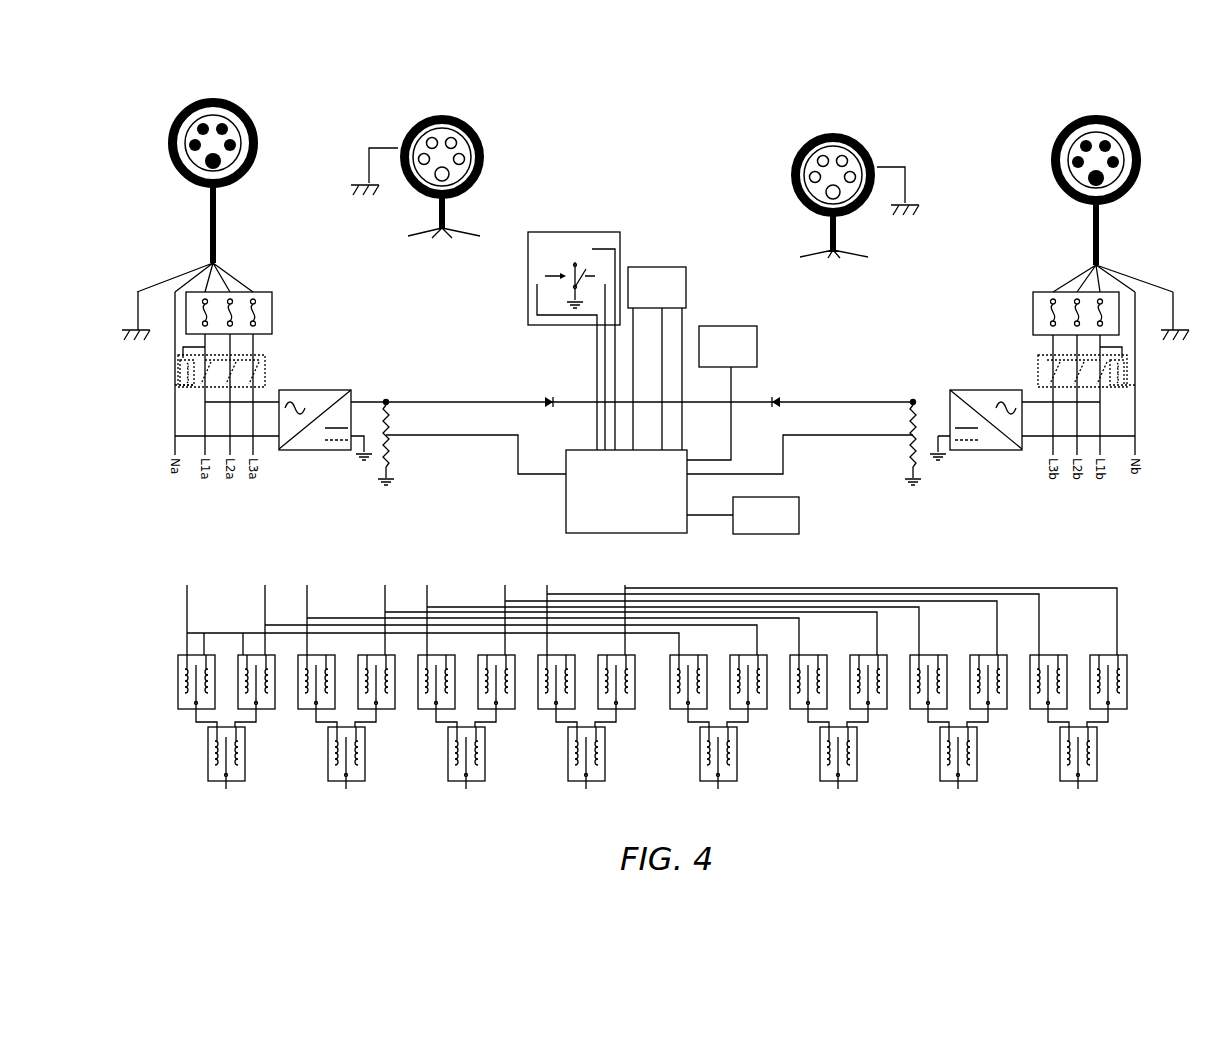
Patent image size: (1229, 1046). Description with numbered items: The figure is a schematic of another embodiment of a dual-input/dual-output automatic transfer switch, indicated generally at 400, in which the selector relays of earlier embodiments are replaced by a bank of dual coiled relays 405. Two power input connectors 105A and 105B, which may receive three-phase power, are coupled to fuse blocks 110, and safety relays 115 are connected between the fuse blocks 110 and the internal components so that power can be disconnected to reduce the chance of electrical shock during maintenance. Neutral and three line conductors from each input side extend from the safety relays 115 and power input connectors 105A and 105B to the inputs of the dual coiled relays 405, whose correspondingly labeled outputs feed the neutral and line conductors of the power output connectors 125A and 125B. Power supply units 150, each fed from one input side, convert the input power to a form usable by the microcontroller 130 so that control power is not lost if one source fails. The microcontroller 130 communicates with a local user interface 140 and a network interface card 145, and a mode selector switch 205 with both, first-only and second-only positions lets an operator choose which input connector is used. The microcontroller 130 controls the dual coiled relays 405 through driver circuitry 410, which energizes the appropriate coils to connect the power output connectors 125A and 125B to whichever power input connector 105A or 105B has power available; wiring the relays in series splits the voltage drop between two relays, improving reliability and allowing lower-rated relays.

The DI/DO ATS embodiment 400 is at (597, 123).
The power input connector 105A is at (217, 97).
The power input connector 105B is at (1093, 117).
The power output connector 125A is at (448, 112).
The power output connector 125B is at (836, 131).
The fuse block 110 is at (264, 311).
The safety relay 115 is at (262, 370).
The power supply unit 150 is at (322, 397).
The mode selector switch 205 is at (562, 240).
The network interface card 145 is at (657, 358).
The local user interface 140 is at (722, 393).
The microcontroller 130 is at (626, 491).
The driver circuitry 410 is at (743, 515).
The dual coiled relays 405 is at (1150, 660).